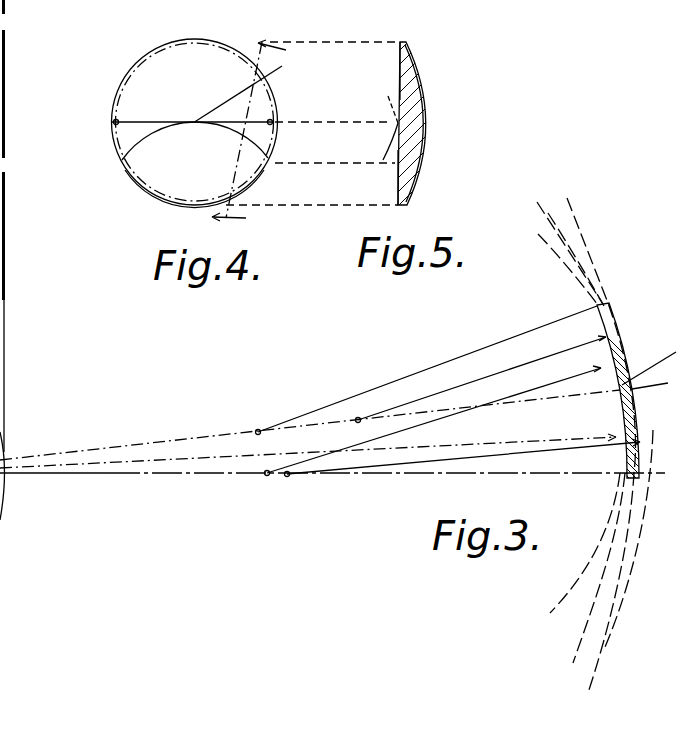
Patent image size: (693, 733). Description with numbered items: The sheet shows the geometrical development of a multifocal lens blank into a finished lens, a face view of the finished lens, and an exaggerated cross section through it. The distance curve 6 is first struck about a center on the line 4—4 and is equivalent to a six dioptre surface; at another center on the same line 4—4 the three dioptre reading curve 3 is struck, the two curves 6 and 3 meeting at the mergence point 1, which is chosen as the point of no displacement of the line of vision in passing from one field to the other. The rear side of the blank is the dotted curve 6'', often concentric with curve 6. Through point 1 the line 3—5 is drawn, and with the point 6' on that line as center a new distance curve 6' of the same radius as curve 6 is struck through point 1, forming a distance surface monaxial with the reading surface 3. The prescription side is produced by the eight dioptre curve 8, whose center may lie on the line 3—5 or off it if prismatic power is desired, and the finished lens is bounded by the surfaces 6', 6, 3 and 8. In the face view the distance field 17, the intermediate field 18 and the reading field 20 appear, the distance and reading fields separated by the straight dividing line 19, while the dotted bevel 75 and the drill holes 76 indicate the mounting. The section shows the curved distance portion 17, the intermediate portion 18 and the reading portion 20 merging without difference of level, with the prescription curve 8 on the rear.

In FIG. 4, the mergence point 1 is at (245, 92).
In FIG. 3, the mergence point 1 is at (653, 364).
In FIG. 3, the reading curve 3 is at (571, 200).
In FIG. 3, the line 4— 4 is at (337, 477).
In FIG. 4, the line 3— 5 is at (306, 136).
In FIG. 3, the line 3— 5 is at (339, 398).
In FIG. 3, the distance curve 6 is at (425, 450).
In FIG. 3, the new distance curve 6' is at (436, 418).
In FIG. 3, the rear curve of the blank 6'' is at (484, 535).
In FIG. 5, the prescription curve 8 is at (425, 108).
In FIG. 3, the prescription curve 8 is at (537, 221).
In FIG. 4, the distance field 17 is at (220, 62).
In FIG. 5, the distance field 17 is at (399, 68).
In FIG. 4, the intermediate field 18 is at (125, 152).
In FIG. 5, the intermediate field 18 is at (399, 163).
In FIG. 4, the dividing line 19 is at (272, 122).
In FIG. 5, the dividing line 19 is at (398, 124).
In FIG. 4, the reading field 20 is at (163, 182).
In FIG. 5, the reading field 20 is at (399, 190).
In FIG. 4, the bevel 75 is at (136, 62).
In FIG. 4, the drill holes 76 is at (114, 122).